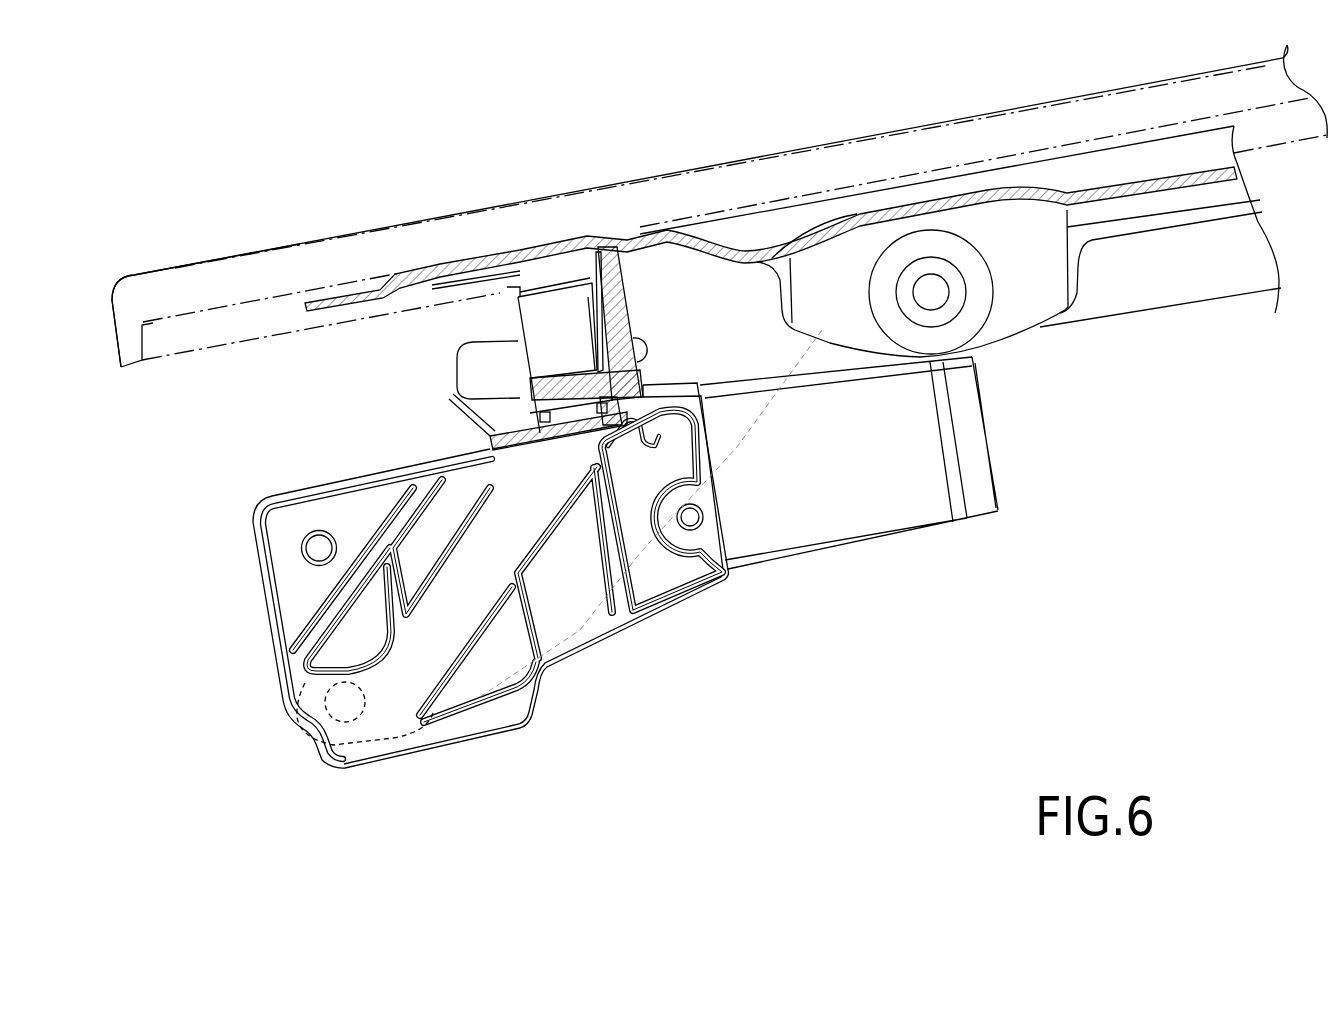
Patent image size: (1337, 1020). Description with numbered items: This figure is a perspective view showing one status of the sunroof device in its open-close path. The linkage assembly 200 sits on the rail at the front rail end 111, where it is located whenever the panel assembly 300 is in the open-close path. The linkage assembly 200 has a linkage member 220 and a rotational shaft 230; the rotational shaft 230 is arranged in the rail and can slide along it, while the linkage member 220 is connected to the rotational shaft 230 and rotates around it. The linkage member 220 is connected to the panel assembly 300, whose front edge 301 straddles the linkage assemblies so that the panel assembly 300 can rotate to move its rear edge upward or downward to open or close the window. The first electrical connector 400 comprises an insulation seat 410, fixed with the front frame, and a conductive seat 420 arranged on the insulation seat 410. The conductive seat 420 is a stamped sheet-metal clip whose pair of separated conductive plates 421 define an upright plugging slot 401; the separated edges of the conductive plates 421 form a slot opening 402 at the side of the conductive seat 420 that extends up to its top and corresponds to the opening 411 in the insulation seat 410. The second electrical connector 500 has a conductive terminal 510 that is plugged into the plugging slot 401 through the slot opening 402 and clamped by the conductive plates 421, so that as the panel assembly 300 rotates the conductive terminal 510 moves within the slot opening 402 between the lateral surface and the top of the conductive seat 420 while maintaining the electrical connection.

The front rail end 111 is at (283, 682).
The linkage assembly 200 is at (582, 607).
The linkage member 220 is at (657, 562).
The rotational shaft 230 is at (343, 700).
The panel assembly 300 is at (388, 202).
The front edge 301 is at (247, 277).
The first electrical connector 400 is at (568, 272).
The plugging slot 401 is at (543, 367).
The slot opening 402 is at (611, 328).
The insulation seat 410 is at (538, 270).
The opening 411 is at (560, 287).
The conductive seat 420 is at (508, 340).
The conductive plate 421 is at (557, 380).
The second electrical connector 500 is at (632, 255).
The conductive terminal 510 is at (560, 380).